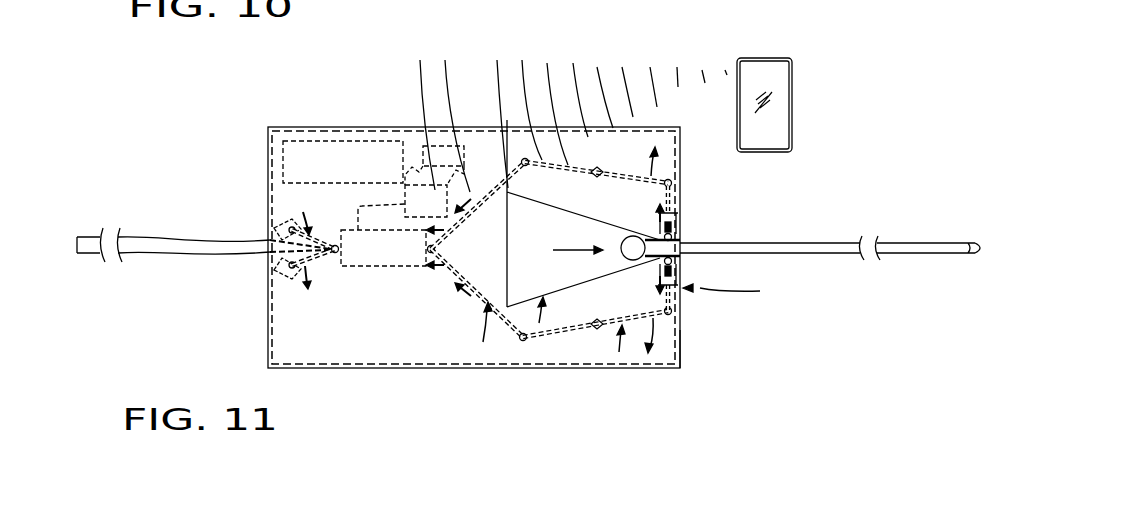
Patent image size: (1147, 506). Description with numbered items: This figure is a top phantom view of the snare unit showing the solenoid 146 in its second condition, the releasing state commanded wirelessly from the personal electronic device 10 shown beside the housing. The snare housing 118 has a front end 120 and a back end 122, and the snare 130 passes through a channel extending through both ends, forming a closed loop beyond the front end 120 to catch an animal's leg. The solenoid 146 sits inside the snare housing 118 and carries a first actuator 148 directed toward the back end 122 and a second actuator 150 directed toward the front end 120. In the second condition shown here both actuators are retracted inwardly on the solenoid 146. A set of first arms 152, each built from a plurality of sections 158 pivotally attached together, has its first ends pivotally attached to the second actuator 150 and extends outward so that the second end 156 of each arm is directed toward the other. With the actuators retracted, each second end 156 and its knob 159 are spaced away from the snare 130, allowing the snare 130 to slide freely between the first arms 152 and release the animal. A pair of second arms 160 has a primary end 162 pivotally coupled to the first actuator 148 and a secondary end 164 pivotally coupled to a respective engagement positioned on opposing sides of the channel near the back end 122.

In FIG. 10, the remote user device 10 is at (790, 58).
In FIG. 11, the snare housing 118 is at (272, 128).
In FIG. 11, the front end 120 is at (682, 330).
In FIG. 11, the back end 122 is at (268, 172).
In FIG. 11, the snare 130 is at (968, 255).
In FIG. 11, the solenoid 146 is at (372, 268).
In FIG. 11, the first actuator 148 is at (342, 228).
In FIG. 11, the second actuator 150 is at (431, 245).
In FIG. 11, the first arms 152 is at (567, 165).
In FIG. 11, the second end 156 is at (678, 233).
In FIG. 11, the sections 158 is at (483, 345).
In FIG. 11, the knobs 159 is at (660, 236).
In FIG. 11, the second arms 160 is at (308, 238).
In FIG. 11, the primary end 162 is at (330, 246).
In FIG. 11, the secondary end 164 is at (283, 243).